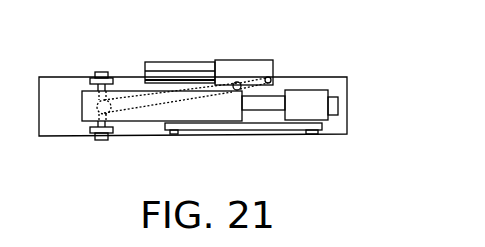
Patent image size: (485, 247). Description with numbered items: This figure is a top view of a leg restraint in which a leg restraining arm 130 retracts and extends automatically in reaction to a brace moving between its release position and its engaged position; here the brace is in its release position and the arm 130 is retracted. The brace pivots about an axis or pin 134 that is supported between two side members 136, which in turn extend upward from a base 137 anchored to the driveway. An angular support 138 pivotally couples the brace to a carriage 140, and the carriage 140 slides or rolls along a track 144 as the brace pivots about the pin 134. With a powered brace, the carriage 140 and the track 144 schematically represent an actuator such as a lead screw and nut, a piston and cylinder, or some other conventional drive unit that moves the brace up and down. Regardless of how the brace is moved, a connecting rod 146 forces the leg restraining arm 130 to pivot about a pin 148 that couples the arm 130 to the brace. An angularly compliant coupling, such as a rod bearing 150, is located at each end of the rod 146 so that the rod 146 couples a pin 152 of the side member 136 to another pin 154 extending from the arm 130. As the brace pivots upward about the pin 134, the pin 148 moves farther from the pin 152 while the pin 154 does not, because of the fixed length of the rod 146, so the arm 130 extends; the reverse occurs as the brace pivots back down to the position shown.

The leg restraining arm 130 is at (178, 62).
The pin 134 is at (102, 140).
The side member 136 is at (95, 72).
The base 137 is at (347, 88).
The angular support 138 is at (245, 122).
The carriage 140 is at (303, 100).
The track 144 is at (338, 105).
The connecting rod 146 is at (137, 103).
The pin 148 is at (237, 82).
The rod bearing 150 is at (97, 108).
The pin 152 is at (113, 128).
The pin 154 is at (267, 77).